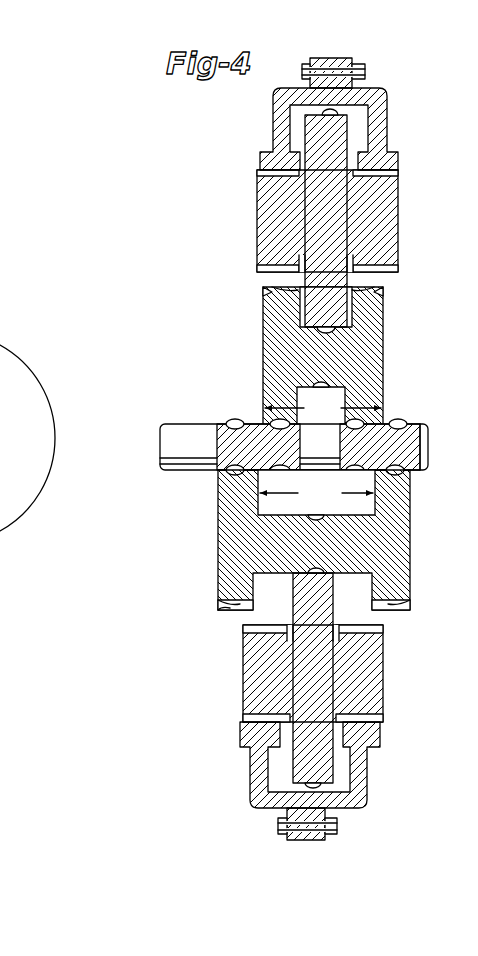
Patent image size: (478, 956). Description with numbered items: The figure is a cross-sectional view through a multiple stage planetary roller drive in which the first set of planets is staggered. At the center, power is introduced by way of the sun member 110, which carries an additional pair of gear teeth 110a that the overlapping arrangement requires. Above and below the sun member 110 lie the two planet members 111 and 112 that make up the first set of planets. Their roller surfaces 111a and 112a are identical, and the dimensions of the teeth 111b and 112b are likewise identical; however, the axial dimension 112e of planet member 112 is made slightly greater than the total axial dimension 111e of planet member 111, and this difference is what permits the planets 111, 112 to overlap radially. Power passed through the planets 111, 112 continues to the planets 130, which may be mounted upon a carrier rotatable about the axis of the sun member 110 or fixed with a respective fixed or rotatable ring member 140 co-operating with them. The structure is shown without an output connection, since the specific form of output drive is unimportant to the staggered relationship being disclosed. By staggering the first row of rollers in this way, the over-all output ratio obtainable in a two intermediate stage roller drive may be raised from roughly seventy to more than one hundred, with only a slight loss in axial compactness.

The sun member 110 is at (286, 432).
The gear teeth 110a is at (244, 424).
The planet member 111 is at (284, 347).
The roller surface 111a is at (268, 292).
The teeth 111b is at (280, 289).
The total axial dimension 111e is at (323, 404).
The planet member 112 is at (236, 519).
The roller surface 112a is at (232, 598).
The teeth 112b is at (228, 610).
The axial dimension 112e is at (316, 495).
The planets 130 is at (276, 214).
The ring member 140 is at (274, 130).